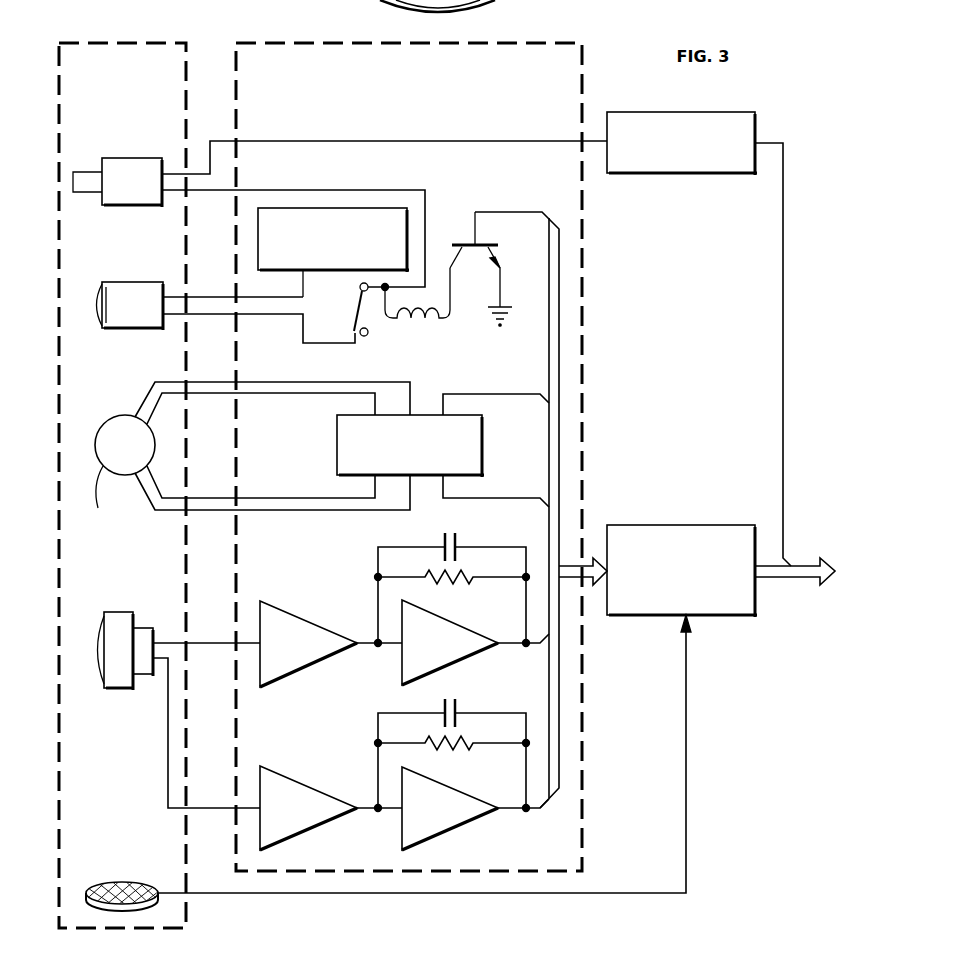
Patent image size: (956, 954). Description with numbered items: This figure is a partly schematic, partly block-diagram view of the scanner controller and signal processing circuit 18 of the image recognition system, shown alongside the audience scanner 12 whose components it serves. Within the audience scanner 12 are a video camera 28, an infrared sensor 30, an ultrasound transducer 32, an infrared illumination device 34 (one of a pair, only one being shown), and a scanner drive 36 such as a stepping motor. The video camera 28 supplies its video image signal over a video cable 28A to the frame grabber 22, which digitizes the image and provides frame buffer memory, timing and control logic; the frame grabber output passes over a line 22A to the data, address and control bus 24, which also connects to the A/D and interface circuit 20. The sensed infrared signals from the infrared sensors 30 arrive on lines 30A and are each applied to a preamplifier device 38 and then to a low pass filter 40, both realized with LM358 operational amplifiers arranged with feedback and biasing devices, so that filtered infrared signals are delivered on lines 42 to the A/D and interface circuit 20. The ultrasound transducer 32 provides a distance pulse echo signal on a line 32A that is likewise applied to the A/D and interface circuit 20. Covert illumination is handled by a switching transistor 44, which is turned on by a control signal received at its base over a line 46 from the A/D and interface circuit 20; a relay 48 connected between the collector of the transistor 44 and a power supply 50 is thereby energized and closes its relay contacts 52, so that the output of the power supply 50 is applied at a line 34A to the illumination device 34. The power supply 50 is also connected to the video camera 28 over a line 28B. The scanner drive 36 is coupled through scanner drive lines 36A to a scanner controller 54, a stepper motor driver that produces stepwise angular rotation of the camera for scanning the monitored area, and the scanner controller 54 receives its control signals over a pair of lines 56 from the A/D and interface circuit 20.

The audience scanner 12 is at (99, 36).
The scanner controller and signal processing circuit 18 is at (586, 366).
The A/D and interface circuit 20 is at (689, 525).
The frame grabber 22 is at (704, 173).
The line 22A is at (783, 326).
The data, address and control bus 24 is at (802, 586).
The video camera 28 is at (126, 158).
The video cable 28A is at (207, 157).
The line 28B is at (358, 190).
The infrared sensor 30 is at (118, 690).
The line 30A is at (216, 642).
The ultrasound transducer 32 is at (112, 882).
The line 32A is at (688, 858).
The infrared illumination device 34 is at (121, 282).
The line 34A is at (206, 312).
The scanner drive 36 is at (110, 420).
The scanner drive lines 36A is at (203, 396).
The preamplifier device 38 is at (309, 618).
The low pass filter 40 is at (448, 619).
The line 42 is at (535, 647).
The switching transistor 44 is at (462, 245).
The line 46 is at (504, 212).
The relay 48 is at (404, 325).
The power supply 50 is at (330, 276).
The relay contacts 52 is at (367, 318).
The scanner controller 54 is at (337, 460).
The lines 56 is at (517, 396).